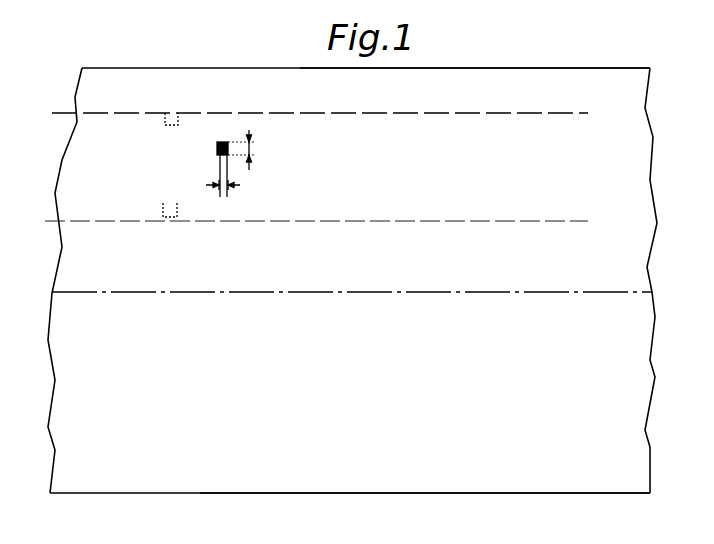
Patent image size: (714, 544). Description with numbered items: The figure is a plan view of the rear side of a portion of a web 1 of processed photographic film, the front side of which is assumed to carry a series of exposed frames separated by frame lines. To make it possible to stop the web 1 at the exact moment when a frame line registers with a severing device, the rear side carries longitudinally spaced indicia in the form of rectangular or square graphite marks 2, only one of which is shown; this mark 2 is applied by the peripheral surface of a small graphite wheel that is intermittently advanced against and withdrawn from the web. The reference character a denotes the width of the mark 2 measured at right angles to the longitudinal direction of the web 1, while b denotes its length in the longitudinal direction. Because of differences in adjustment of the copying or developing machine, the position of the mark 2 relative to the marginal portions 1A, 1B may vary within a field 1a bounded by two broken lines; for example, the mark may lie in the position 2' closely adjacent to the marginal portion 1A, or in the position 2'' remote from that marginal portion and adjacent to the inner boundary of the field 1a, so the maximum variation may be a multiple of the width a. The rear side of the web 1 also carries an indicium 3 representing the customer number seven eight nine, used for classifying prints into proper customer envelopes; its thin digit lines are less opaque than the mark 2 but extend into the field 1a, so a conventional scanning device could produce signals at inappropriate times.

The web 1 is at (50, 338).
The field 1a is at (323, 138).
The marginal portion 1A is at (490, 68).
The marginal portion 1B is at (383, 493).
The graphite mark 2 is at (235, 138).
The position of the mark 2' is at (168, 103).
The position of the mark 2'' is at (167, 232).
The indicium 3 is at (402, 228).
The width of the mark a is at (248, 150).
The length of the mark b is at (216, 197).